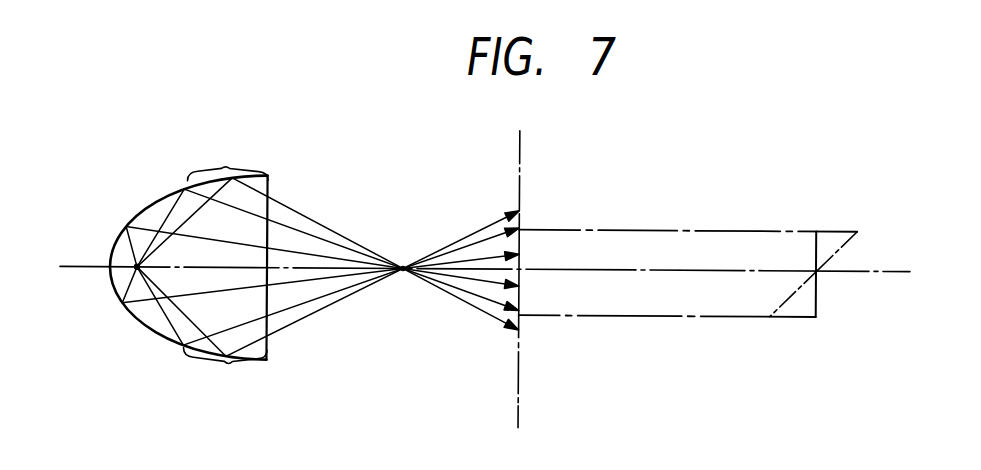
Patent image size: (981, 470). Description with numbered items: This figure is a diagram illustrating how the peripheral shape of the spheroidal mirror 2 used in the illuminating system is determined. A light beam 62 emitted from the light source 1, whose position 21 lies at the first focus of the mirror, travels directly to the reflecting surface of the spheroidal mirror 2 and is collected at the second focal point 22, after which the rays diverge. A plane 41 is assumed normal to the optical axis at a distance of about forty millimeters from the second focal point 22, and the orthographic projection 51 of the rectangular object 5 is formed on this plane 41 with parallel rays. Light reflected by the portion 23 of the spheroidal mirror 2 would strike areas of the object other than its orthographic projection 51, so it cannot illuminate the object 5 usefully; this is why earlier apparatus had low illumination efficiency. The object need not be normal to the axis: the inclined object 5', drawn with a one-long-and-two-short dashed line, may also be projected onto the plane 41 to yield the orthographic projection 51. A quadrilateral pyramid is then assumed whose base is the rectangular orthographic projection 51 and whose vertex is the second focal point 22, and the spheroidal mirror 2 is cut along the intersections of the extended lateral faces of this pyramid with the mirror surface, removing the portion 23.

The spheroidal mirror 2 is at (141, 213).
The portion of the spheroidal mirror 23 is at (225, 267).
The light beam 62 is at (130, 247).
The light source 1 is at (132, 270).
The light source position 21 is at (136, 266).
The second focal point 22 is at (402, 272).
The plane 41 is at (521, 168).
The orthographic projection 51 is at (521, 243).
The object 5 is at (829, 246).
The inclined object 5' is at (829, 246).